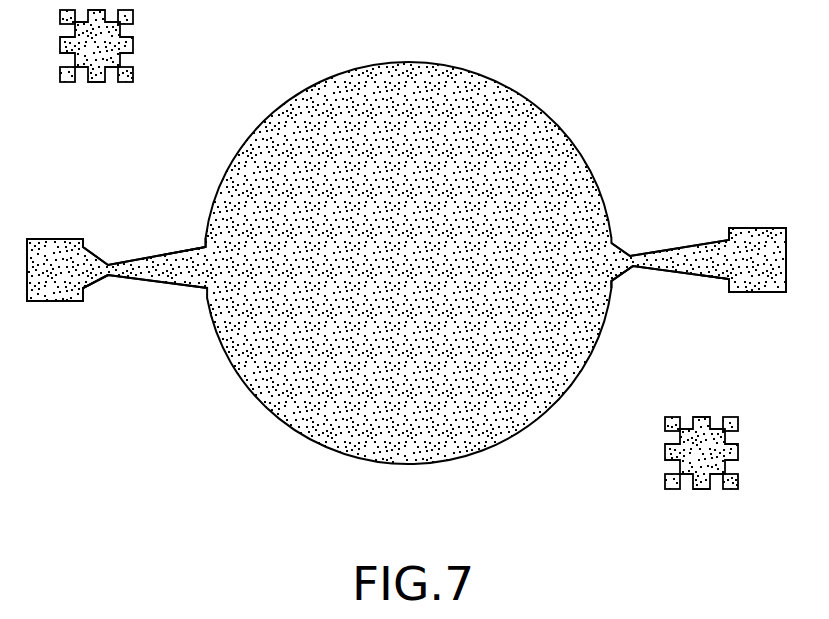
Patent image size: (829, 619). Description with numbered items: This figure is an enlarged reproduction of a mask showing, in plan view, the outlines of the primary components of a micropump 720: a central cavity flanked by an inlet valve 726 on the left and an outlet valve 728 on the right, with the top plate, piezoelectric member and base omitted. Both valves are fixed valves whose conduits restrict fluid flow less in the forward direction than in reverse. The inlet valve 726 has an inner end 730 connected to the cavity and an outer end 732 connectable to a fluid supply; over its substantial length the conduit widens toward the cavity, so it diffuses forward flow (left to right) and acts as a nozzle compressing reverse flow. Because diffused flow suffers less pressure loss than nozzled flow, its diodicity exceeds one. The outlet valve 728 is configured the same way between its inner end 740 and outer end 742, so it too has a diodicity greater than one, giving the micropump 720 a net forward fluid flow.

The micropump 720 is at (213, 396).
The inlet valve 726 is at (113, 230).
The outlet valve 728 is at (662, 215).
The inner end 730 is at (200, 248).
The outer end 732 is at (87, 292).
The inner end 740 is at (612, 287).
The outer end 742 is at (730, 283).